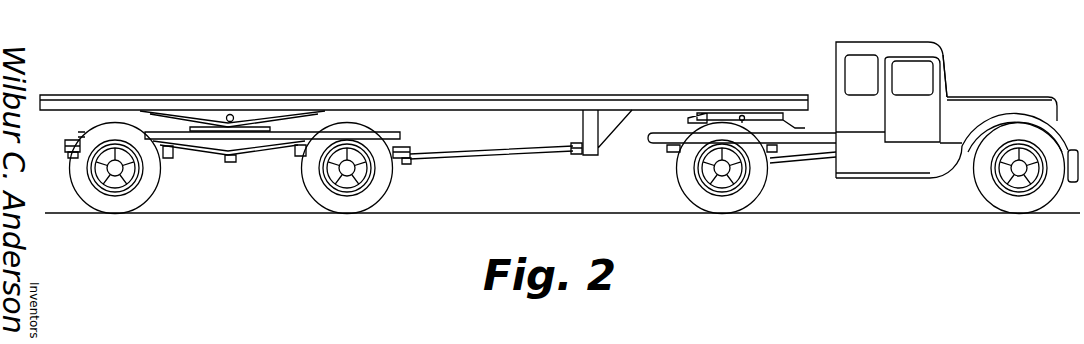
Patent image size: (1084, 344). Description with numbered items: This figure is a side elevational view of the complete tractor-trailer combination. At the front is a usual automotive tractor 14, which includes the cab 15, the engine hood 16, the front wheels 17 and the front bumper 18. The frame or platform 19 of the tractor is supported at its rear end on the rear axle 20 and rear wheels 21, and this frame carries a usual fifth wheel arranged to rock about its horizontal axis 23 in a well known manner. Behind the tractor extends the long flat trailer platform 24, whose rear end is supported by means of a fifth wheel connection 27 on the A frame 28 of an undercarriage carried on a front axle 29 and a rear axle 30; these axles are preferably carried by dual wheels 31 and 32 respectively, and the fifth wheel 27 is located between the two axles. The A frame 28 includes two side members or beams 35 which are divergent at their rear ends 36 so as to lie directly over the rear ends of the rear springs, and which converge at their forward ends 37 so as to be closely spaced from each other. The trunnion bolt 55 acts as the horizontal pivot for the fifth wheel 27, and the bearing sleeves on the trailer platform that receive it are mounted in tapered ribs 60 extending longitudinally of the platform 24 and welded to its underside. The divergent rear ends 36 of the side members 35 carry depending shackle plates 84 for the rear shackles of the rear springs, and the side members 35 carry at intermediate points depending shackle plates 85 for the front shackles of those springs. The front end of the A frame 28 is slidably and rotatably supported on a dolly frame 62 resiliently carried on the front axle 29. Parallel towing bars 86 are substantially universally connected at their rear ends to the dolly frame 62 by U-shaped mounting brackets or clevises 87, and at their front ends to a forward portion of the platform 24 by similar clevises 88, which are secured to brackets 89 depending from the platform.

The automotive tractor 14 is at (947, 62).
The cab 15 is at (880, 47).
The engine hood 16 is at (1000, 96).
The front wheels 17 is at (1012, 206).
The front bumper 18 is at (1075, 183).
The frame or platform 19 is at (815, 138).
The rear axle 20 is at (722, 172).
The rear wheels 21 is at (750, 196).
The horizontal axis 23 is at (743, 117).
The trailer platform 24 is at (460, 93).
The fifth wheel connection 27 is at (186, 125).
The A frame 28 is at (257, 145).
The front axle 29 is at (347, 172).
The rear axle 30 is at (117, 172).
The dual wheels 31 is at (331, 200).
The dual wheels 32 is at (145, 196).
The side members or beams 35 is at (205, 143).
The divergent rear ends 36 is at (70, 140).
The forward ends 37 is at (397, 136).
The trunnion bolt 55 is at (232, 114).
The tapered ribs 60 is at (262, 110).
The dolly frame 62 is at (412, 147).
The shackle plates 84 is at (70, 158).
The shackle plates 85 is at (170, 148).
The parallel towing bars 86 is at (490, 151).
The clevises 87 is at (406, 164).
The clevises 88 is at (575, 154).
The brackets 89 is at (603, 150).